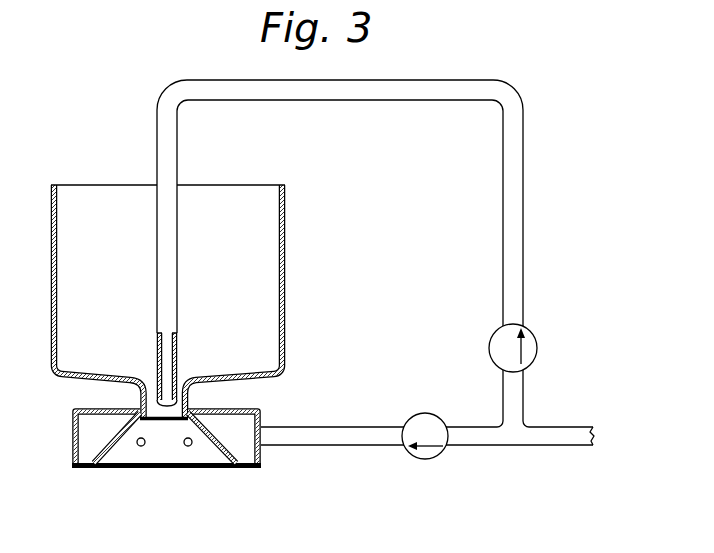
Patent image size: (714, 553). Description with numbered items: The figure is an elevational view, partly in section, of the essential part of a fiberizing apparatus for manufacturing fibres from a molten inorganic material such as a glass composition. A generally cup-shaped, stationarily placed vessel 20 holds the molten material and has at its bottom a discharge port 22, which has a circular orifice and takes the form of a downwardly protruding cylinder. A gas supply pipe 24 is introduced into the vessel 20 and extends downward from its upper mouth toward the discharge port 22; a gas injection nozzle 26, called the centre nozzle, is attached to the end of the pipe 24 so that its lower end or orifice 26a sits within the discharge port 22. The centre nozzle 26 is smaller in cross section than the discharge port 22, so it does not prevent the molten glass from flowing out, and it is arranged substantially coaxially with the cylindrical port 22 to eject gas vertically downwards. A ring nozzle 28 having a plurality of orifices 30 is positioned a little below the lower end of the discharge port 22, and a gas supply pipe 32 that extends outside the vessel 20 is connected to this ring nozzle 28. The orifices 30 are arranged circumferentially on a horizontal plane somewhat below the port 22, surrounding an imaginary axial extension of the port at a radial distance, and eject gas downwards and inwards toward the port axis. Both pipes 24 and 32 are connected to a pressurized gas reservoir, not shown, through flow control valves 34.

The vessel 20 is at (285, 232).
The discharge port 22 is at (173, 408).
The gas supply pipe 24 is at (168, 143).
The gas injection nozzle 26 is at (170, 375).
The lower end or orifice of the nozzle 26a is at (152, 397).
The ring nozzle 28 is at (72, 410).
The orifices 30 is at (110, 444).
The gas supply pipe 32 is at (328, 437).
The flow control valves 34 is at (440, 458).